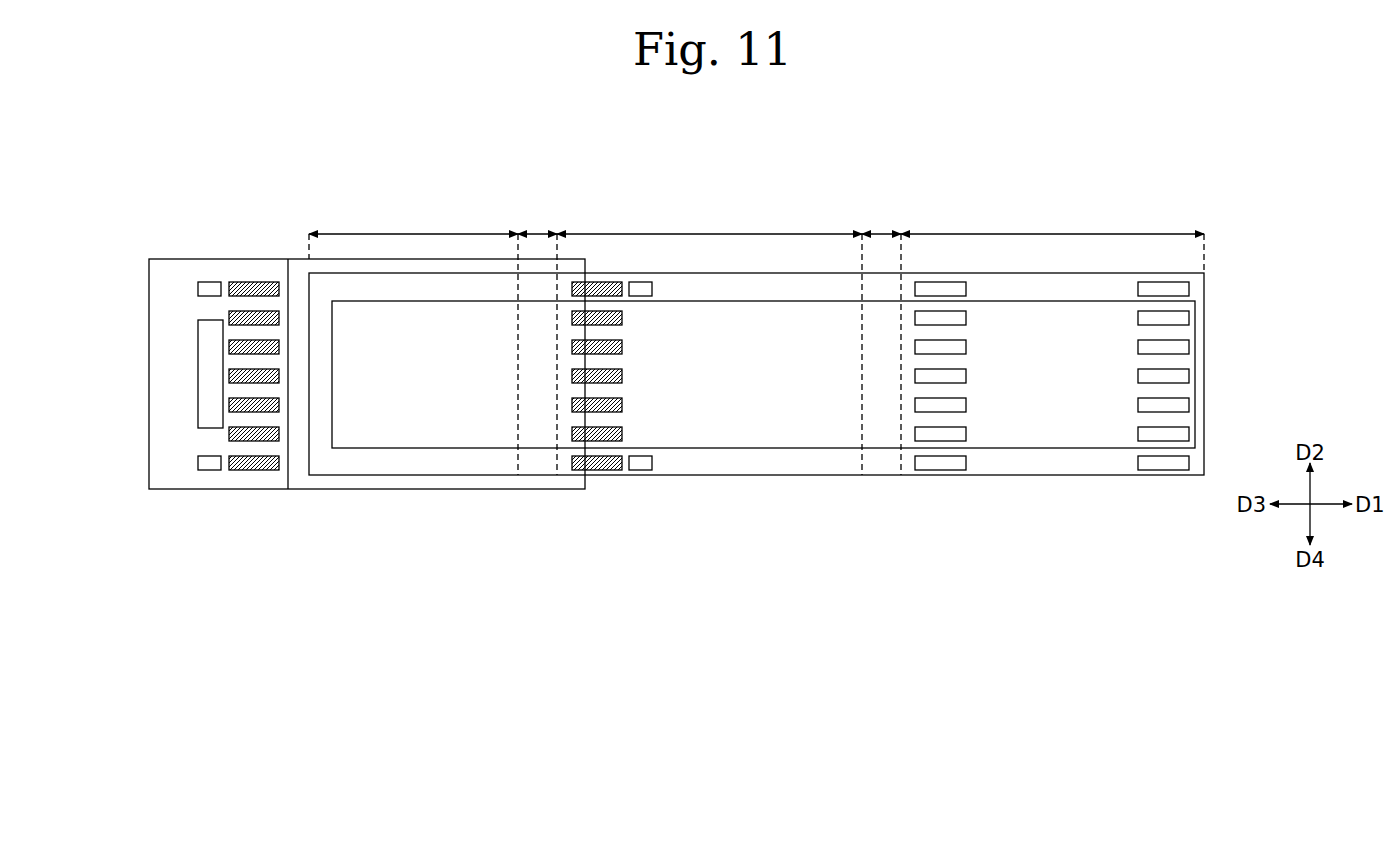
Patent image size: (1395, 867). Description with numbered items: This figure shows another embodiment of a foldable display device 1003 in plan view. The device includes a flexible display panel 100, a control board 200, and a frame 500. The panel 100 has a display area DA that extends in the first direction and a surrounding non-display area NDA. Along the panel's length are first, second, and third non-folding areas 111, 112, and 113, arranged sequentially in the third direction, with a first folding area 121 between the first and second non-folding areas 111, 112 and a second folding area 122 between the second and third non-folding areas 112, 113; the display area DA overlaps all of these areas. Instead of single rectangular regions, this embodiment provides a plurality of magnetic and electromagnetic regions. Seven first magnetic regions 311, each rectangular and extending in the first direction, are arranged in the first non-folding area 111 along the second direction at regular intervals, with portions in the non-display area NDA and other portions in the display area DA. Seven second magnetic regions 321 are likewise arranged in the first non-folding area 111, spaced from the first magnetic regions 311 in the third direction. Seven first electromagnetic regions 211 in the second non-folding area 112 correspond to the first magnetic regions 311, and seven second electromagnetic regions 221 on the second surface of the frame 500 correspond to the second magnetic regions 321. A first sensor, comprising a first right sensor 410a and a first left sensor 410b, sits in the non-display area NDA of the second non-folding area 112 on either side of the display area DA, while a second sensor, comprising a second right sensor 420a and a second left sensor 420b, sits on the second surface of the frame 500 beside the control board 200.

The display device 1003 is at (1130, 153).
The flexible display panel 100 is at (1226, 286).
The first non-folding area 111 is at (1052, 240).
The second non-folding area 112 is at (709, 341).
The third non-folding area 113 is at (413, 341).
The first folding area 121 is at (880, 341).
The second folding area 122 is at (537, 341).
The control board 200 is at (210, 373).
The first electromagnetic region 211 is at (598, 288).
The second electromagnetic region 221 is at (254, 288).
The first magnetic region 311 is at (1161, 288).
The second magnetic region 321 is at (938, 288).
The first right sensor 410a is at (639, 470).
The first left sensor 410b is at (643, 288).
The second right sensor 420a is at (210, 470).
The second left sensor 420b is at (210, 288).
The frame 500 is at (160, 442).
The display area DA is at (433, 430).
The non-display area NDA is at (361, 465).